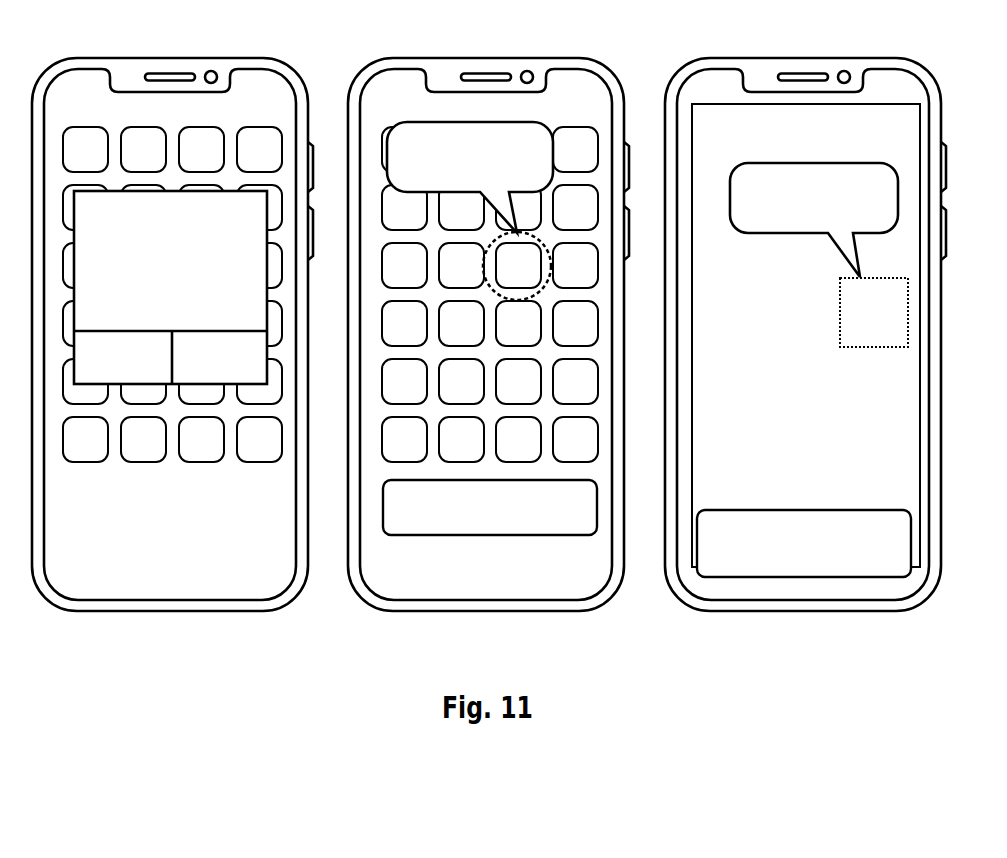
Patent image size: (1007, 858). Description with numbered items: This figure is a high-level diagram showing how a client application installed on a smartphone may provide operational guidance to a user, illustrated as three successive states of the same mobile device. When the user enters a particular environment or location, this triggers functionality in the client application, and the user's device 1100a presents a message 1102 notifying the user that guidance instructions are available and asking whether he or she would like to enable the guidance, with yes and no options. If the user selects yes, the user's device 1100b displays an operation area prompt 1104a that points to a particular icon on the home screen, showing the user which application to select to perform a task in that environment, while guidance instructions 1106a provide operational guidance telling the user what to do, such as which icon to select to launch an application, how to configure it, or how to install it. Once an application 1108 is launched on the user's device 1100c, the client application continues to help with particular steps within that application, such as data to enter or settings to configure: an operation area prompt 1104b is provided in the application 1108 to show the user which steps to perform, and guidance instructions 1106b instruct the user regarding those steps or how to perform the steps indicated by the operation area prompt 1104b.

The user's device 1100a is at (172, 62).
The user's device 1100b is at (487, 62).
The user's device 1100c is at (805, 62).
The message 1102 is at (228, 198).
The operation area prompt 1104a is at (403, 136).
The operation area prompt 1104b is at (863, 348).
The guidance instructions 1106a is at (480, 525).
The guidance instructions 1106b is at (806, 520).
The application 1108 is at (880, 138).